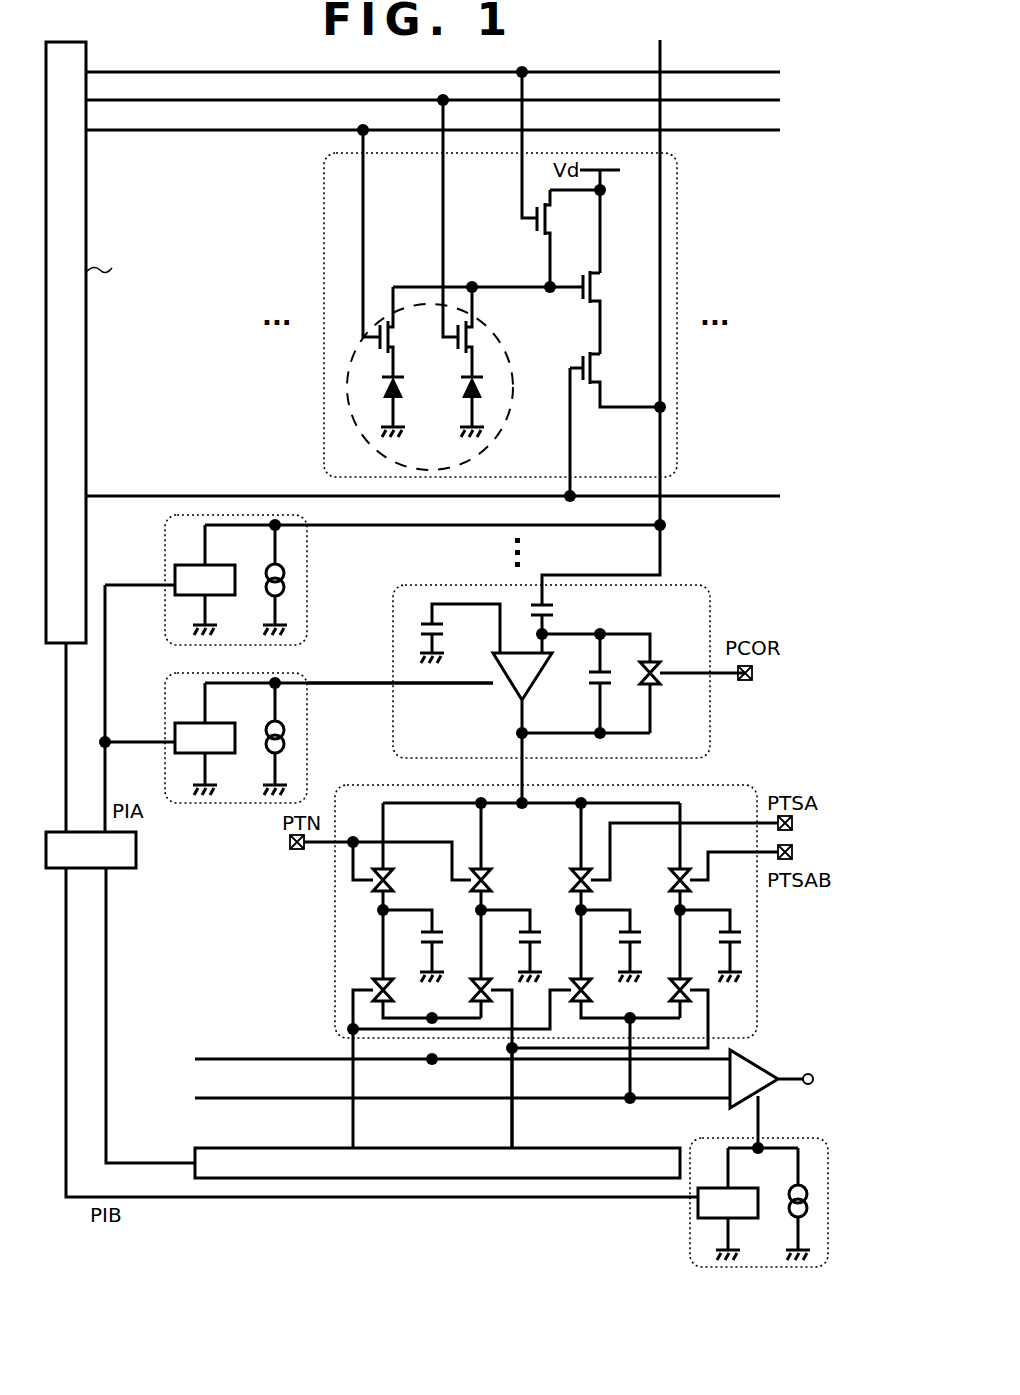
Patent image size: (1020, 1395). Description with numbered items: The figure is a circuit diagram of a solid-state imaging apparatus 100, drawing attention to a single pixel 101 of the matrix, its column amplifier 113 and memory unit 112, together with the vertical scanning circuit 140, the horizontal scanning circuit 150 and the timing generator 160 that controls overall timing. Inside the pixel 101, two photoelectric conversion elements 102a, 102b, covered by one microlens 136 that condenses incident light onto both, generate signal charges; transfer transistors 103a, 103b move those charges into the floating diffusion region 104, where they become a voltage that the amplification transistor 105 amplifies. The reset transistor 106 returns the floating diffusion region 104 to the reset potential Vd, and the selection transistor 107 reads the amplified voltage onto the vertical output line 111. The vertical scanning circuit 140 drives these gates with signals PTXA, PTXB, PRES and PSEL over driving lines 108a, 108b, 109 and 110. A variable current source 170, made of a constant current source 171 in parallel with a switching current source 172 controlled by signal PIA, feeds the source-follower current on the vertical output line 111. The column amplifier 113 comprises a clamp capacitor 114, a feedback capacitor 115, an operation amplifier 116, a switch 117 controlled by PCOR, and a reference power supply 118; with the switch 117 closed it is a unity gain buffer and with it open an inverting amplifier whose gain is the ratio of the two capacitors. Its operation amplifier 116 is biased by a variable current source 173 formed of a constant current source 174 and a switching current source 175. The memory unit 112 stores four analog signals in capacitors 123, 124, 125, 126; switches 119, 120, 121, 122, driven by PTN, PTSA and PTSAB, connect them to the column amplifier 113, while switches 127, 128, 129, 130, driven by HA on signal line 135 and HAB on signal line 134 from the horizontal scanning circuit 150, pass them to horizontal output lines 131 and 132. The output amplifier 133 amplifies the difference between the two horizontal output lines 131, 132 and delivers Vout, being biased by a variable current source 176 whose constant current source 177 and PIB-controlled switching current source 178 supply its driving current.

The solid-state imaging apparatus 100 is at (778, 48).
The pixel 101 is at (326, 222).
The photoelectric conversion element 102a is at (402, 392).
The photoelectric conversion element 102b is at (480, 392).
The transfer transistor 103a is at (392, 340).
The transfer transistor 103b is at (476, 336).
The floating diffusion region 104 is at (548, 287).
The amplification transistor 105 is at (592, 283).
The reset transistor 106 is at (535, 222).
The selection transistor 107 is at (592, 365).
The driving line 108a is at (218, 131).
The driving line 108b is at (218, 101).
The driving line 109 is at (218, 73).
The driving line 110 is at (218, 497).
The vertical output line 111 is at (662, 448).
The memory unit 112 is at (757, 949).
The column amplifier 113 is at (712, 608).
The clamp capacitor 114 is at (555, 612).
The feedback capacitor 115 is at (592, 688).
The operation amplifier 116 is at (515, 698).
The switch 117 is at (656, 688).
The reference power supply 118 is at (442, 637).
The switch 119 is at (378, 890).
The switch 120 is at (476, 890).
The switch 121 is at (576, 890).
The switch 122 is at (674, 890).
The capacitor 123 is at (430, 938).
The capacitor 124 is at (528, 938).
The capacitor 125 is at (628, 938).
The capacitor 126 is at (726, 938).
The switch 127 is at (374, 985).
The switch 128 is at (474, 985).
The switch 129 is at (574, 985).
The switch 130 is at (674, 985).
The horizontal output line 131 is at (218, 1060).
The horizontal output line 132 is at (218, 1099).
The output amplifier 133 is at (762, 1066).
The signal line 134 is at (512, 1079).
The signal line 135 is at (353, 1079).
The microlens 136 is at (346, 412).
The vertical scanning circuit 140 is at (84, 341).
The horizontal scanning circuit 150 is at (582, 1147).
The timing generator 160 is at (136, 851).
The variable current source 170 is at (307, 578).
The constant current source 171 is at (266, 574).
The switching current source 172 is at (210, 598).
The variable current source 173 is at (307, 736).
The constant current source 174 is at (266, 732).
The switching current source 175 is at (210, 758).
The variable current source 176 is at (689, 1244).
The constant current source 177 is at (788, 1196).
The switching current source 178 is at (736, 1220).